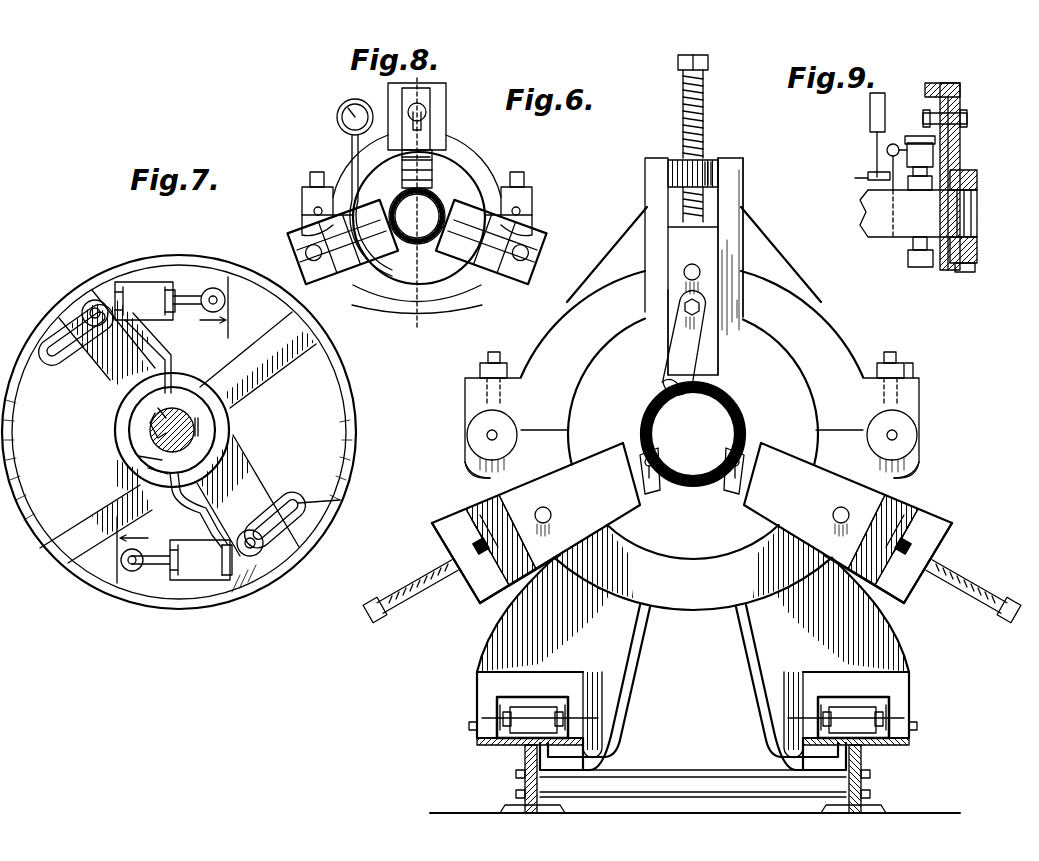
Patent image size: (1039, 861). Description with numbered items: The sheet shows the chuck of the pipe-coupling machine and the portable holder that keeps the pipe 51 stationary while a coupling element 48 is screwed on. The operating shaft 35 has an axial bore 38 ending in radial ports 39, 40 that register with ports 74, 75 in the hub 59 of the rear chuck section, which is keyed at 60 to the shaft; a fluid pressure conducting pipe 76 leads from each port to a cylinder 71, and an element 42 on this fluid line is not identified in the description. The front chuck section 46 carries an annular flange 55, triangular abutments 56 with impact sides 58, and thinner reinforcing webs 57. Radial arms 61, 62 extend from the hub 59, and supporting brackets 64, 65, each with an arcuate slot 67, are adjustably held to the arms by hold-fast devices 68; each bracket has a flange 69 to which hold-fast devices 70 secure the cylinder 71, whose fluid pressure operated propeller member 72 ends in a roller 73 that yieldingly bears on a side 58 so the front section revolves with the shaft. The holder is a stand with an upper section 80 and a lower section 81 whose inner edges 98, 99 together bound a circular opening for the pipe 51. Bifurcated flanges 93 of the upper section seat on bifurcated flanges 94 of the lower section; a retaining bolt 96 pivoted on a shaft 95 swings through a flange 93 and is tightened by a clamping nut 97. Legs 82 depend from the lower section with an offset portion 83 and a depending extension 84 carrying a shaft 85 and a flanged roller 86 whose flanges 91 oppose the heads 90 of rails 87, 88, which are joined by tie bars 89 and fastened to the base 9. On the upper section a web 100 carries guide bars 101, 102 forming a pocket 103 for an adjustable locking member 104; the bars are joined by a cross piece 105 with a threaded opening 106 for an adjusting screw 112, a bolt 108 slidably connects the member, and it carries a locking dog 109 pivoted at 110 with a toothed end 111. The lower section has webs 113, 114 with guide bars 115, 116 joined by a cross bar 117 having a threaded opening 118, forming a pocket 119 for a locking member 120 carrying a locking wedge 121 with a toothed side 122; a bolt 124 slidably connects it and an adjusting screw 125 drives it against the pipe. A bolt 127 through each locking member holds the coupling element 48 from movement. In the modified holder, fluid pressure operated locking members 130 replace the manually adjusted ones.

In FIG. 8, the base 9 is at (417, 202).
In FIG. 7, the operating shaft 35 is at (179, 418).
In FIG. 7, the axial bore 38 is at (210, 438).
In FIG. 7, the port 39 is at (180, 388).
In FIG. 7, the port 40 is at (138, 456).
In FIG. 8, the pressure gauge 42 is at (338, 112).
In FIG. 9, the pressure gauge 42 is at (870, 108).
In FIG. 9, the front section of chuck 46 is at (940, 85).
In FIG. 9, the coupling element 48 is at (978, 185).
In FIG. 6, the pipe 51 is at (693, 420).
In FIG. 8, the pipe 51 is at (419, 218).
In FIG. 9, the pipe 51 is at (868, 212).
In FIG. 7, the annular flange 55 is at (186, 265).
In FIG. 7, the abutments 56 is at (232, 272).
In FIG. 7, the reinforcing webs 57 is at (178, 437).
In FIG. 7, the side of abutment 58 is at (228, 342).
In FIG. 7, the hub 59 is at (203, 425).
In FIG. 7, the key 60 is at (156, 428).
In FIG. 7, the arm 61 is at (255, 470).
In FIG. 7, the arm 62 is at (107, 338).
In FIG. 7, the supporting bracket 64 is at (56, 360).
In FIG. 7, the supporting bracket 65 is at (290, 535).
In FIG. 7, the arcuate slot 67 is at (330, 499).
In FIG. 7, the hold-fast devices 68 is at (84, 306).
In FIG. 7, the flange 69 is at (140, 348).
In FIG. 7, the hold-fast devices 70 is at (145, 262).
In FIG. 7, the cylinder 71 is at (160, 296).
In FIG. 8, the cylinder 71 is at (402, 168).
In FIG. 9, the cylinder 71 is at (912, 276).
In FIG. 7, the propeller member 72 is at (186, 294).
In FIG. 7, the roller 73 is at (225, 303).
In FIG. 7, the port 74 is at (160, 405).
In FIG. 7, the port 75 is at (148, 470).
In FIG. 7, the fluid pressure conducting pipe 76 is at (165, 352).
In FIG. 6, the upper section 80 is at (805, 302).
In FIG. 8, the upper section 80 is at (474, 153).
In FIG. 6, the lower section 81 is at (540, 432).
In FIG. 8, the lower section 81 is at (520, 232).
In FIG. 6, the legs 82 is at (630, 655).
In FIG. 6, the offset portion 83 is at (522, 675).
In FIG. 6, the depending extension 84 is at (477, 690).
In FIG. 6, the shaft 85 is at (469, 724).
In FIG. 6, the flanged roller 86 is at (530, 706).
In FIG. 6, the rail 87 is at (525, 770).
In FIG. 6, the rail 88 is at (861, 770).
In FIG. 6, the tie bars 89 is at (678, 790).
In FIG. 6, the rail head 90 is at (512, 741).
In FIG. 6, the roller flange 91 is at (497, 714).
In FIG. 6, the bifurcated flanges 93 is at (465, 397).
In FIG. 6, the bifurcated flanges 94 is at (468, 437).
In FIG. 6, the shaft 95 is at (480, 369).
In FIG. 8, the shaft 95 is at (302, 210).
In FIG. 6, the retaining bolt 96 is at (494, 356).
In FIG. 6, the clamping nut 97 is at (903, 364).
In FIG. 6, the inner edge 98 is at (789, 362).
In FIG. 6, the inner edge 99 is at (733, 553).
In FIG. 6, the web 100 is at (612, 248).
In FIG. 6, the guide bar 101 is at (726, 232).
In FIG. 6, the guide bar 102 is at (650, 216).
In FIG. 6, the pocket 103 is at (702, 222).
In FIG. 6, the adjustable locking member 104 is at (693, 240).
In FIG. 9, the adjustable locking member 104 is at (962, 140).
In FIG. 6, the cross piece 105 is at (712, 165).
In FIG. 6, the threaded opening 106 is at (682, 167).
In FIG. 6, the bolt 108 is at (702, 272).
In FIG. 9, the bolt 108 is at (968, 118).
In FIG. 6, the locking dog 109 is at (678, 340).
In FIG. 6, the pivot 110 is at (660, 300).
In FIG. 6, the toothed end 111 is at (664, 382).
In FIG. 6, the adjusting screw 112 is at (683, 96).
In FIG. 6, the web 113 is at (900, 478).
In FIG. 6, the web 114 is at (485, 476).
In FIG. 6, the guide bar 115 is at (441, 537).
In FIG. 6, the guide bar 116 is at (540, 585).
In FIG. 6, the cross bar 117 is at (478, 588).
In FIG. 6, the threaded opening 118 is at (452, 556).
In FIG. 6, the pocket 119 is at (515, 552).
In FIG. 6, the locking member 120 is at (692, 523).
In FIG. 6, the locking wedge 121 is at (650, 483).
In FIG. 6, the toothed side 122 is at (640, 462).
In FIG. 6, the bolt 124 is at (542, 513).
In FIG. 6, the adjusting screw 125 is at (400, 617).
In FIG. 9, the bolt 127 is at (963, 272).
In FIG. 8, the fluid pressure operated locking members 130 is at (430, 192).